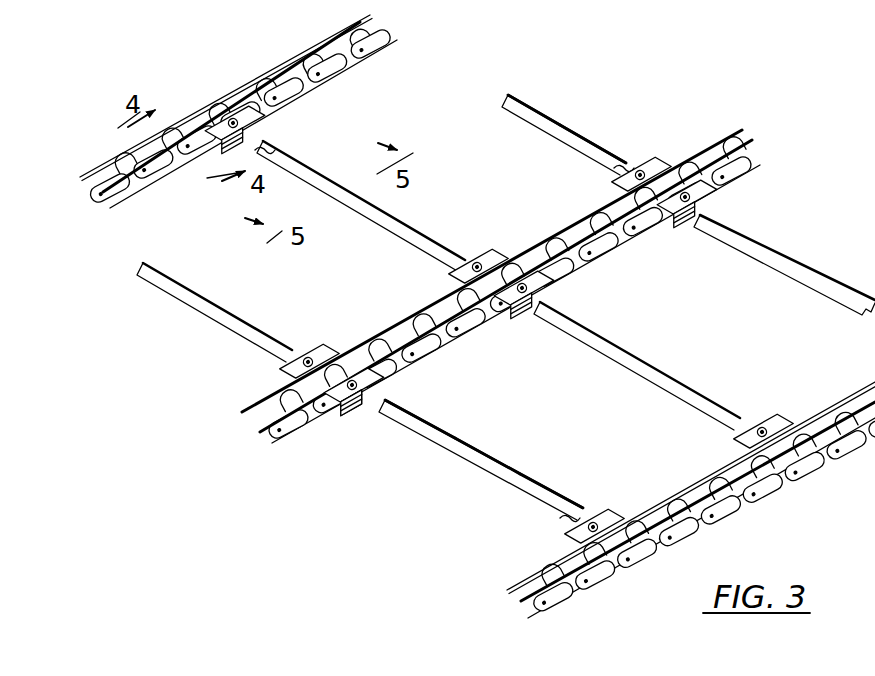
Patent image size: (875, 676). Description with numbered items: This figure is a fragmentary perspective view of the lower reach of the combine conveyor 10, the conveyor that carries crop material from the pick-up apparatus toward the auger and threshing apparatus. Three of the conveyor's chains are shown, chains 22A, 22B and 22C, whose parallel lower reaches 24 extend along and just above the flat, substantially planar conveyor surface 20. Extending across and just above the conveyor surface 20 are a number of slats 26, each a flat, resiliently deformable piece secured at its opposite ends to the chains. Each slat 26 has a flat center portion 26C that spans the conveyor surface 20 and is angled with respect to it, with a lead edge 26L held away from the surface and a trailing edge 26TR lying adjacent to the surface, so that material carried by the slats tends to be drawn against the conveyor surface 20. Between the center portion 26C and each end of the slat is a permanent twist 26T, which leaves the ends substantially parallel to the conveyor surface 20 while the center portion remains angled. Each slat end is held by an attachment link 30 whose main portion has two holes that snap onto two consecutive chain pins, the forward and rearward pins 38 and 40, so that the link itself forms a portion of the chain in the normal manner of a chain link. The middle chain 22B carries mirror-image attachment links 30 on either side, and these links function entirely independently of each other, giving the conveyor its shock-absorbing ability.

The combine conveyor 10 is at (160, 50).
The conveyor surface 20 is at (459, 316).
The chain 22A is at (767, 476).
The middle chain 22B is at (442, 348).
The chain 22C is at (213, 101).
The lower reach 24 is at (107, 163).
The slat 26 is at (517, 110).
The lead edge 26L is at (538, 107).
The center portion 26C is at (487, 465).
The twist 26T is at (373, 409).
The trailing edge 26TR is at (542, 136).
The attachment link 30 is at (543, 278).
The forward pin 38 is at (685, 490).
The rearward pin 40 is at (667, 503).